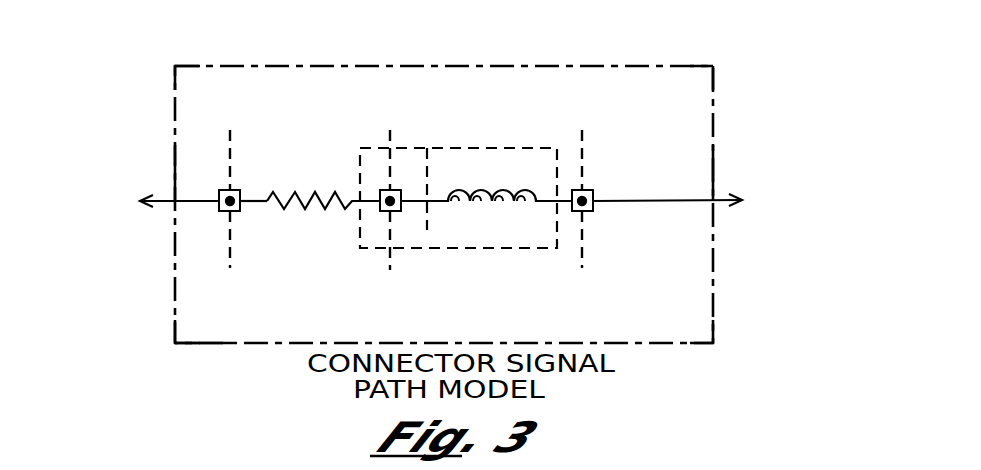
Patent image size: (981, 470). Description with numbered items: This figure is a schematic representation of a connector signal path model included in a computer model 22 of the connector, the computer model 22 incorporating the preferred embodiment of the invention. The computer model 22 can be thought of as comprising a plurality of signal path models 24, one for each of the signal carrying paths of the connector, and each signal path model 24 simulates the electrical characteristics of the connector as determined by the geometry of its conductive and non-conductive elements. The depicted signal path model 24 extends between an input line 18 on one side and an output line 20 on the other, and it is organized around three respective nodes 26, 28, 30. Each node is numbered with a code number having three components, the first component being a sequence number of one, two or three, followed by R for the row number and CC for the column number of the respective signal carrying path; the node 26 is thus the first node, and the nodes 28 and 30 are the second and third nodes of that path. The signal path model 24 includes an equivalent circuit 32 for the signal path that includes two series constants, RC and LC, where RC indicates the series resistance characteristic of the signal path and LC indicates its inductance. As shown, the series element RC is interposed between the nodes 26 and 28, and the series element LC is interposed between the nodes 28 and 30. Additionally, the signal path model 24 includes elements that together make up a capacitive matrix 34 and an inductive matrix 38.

The input line 18 is at (114, 199).
The output line 20 is at (742, 195).
The computer model 22 is at (175, 295).
The signal path model 24 is at (203, 345).
The node 26 is at (238, 188).
The node 28 is at (398, 190).
The node 30 is at (592, 188).
The equivalent circuit 32 is at (352, 175).
The capacitive matrix 34 is at (376, 138).
The inductive matrix 38 is at (487, 142).